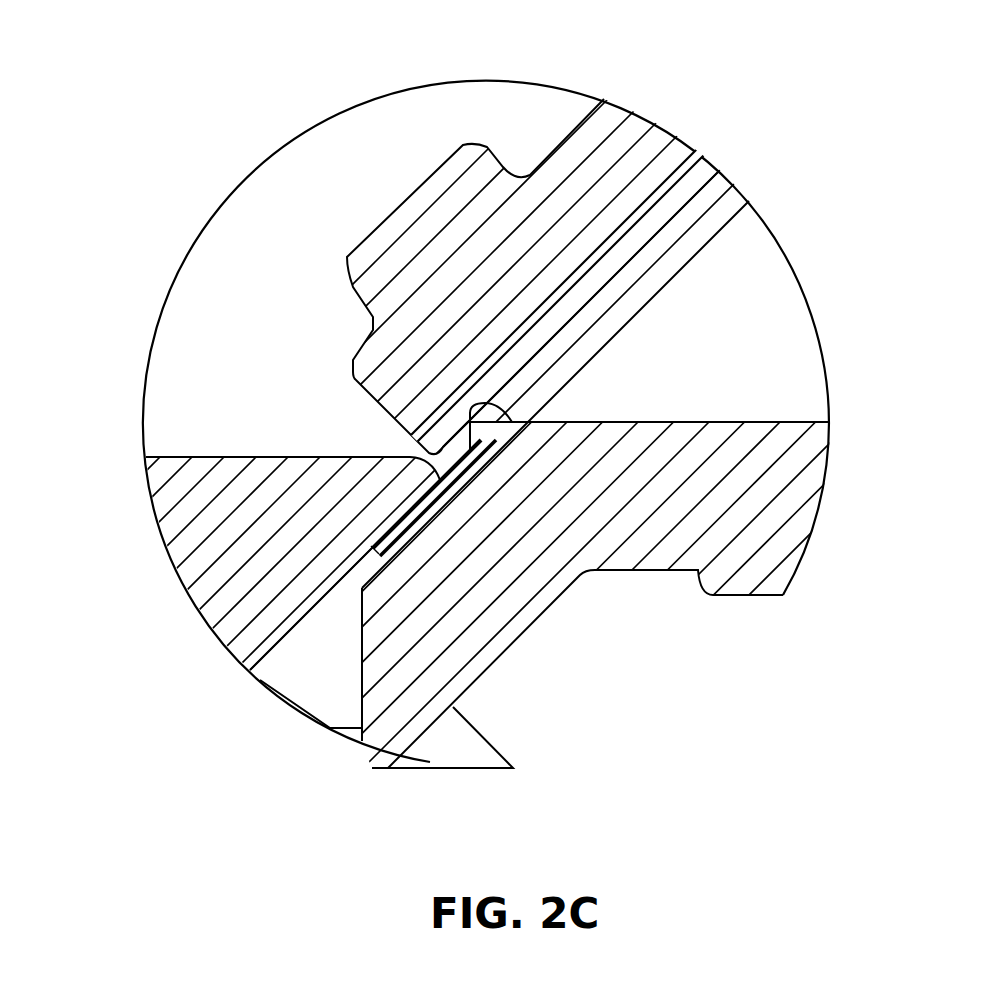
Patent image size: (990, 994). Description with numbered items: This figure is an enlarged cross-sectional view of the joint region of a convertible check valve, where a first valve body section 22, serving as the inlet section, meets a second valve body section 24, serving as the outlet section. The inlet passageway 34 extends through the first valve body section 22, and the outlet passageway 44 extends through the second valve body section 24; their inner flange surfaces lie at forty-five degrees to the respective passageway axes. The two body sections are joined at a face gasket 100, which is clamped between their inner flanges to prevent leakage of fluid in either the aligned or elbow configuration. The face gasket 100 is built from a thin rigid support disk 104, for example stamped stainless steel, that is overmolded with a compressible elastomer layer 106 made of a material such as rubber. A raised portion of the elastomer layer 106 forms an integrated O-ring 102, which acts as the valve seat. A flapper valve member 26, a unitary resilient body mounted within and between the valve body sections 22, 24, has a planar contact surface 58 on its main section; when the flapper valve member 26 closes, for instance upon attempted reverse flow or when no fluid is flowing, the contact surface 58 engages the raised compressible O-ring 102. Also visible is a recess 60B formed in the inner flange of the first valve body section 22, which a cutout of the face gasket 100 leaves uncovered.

The flapper valve member 26 is at (580, 125).
The contact surface 58 is at (640, 263).
The central passageway 44 is at (246, 303).
The central passageway 34 is at (770, 333).
The O-ring 102 is at (505, 408).
The first valve body section 22 is at (828, 520).
The second valve body section 24 is at (160, 537).
The support disk 104 is at (450, 503).
The elastomer layer 106 is at (410, 547).
The face gasket 100 is at (252, 677).
The recess 60B is at (307, 720).